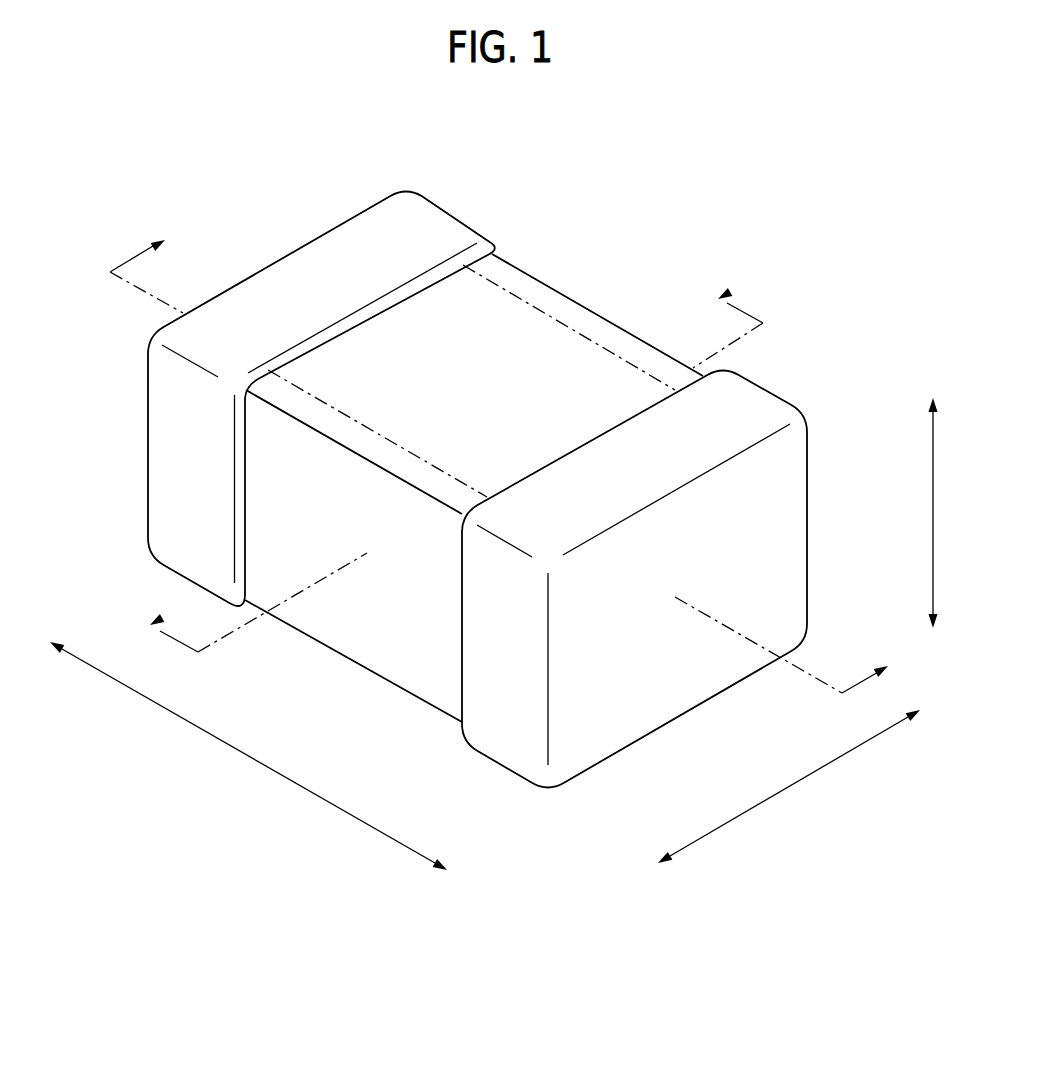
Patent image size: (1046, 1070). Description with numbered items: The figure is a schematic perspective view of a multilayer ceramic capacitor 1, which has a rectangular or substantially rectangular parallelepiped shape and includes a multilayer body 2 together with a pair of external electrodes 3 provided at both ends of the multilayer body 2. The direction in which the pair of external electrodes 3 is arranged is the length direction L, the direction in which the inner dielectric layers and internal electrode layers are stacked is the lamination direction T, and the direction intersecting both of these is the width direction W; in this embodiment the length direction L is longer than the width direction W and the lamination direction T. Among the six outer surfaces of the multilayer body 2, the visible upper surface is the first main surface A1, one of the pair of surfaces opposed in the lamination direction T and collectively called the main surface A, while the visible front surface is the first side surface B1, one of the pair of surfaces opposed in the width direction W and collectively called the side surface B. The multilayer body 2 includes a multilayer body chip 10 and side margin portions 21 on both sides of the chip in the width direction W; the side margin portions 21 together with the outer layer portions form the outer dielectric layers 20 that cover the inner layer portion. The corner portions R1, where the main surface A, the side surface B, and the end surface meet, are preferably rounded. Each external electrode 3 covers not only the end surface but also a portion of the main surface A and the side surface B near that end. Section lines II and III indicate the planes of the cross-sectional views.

The multilayer ceramic capacitor 1 is at (848, 248).
The multilayer body 2 is at (474, 460).
The external electrode 3 is at (413, 217).
The multilayer body chip 10 is at (393, 333).
The outer dielectric layers 20 is at (613, 327).
The side margin portions 21 is at (295, 403).
The corner portions R1 is at (553, 312).
The first main surface A1 is at (379, 438).
The main surface A is at (512, 387).
The first side surface B1 is at (353, 616).
The side surface B is at (385, 535).
The length direction L is at (248, 756).
The width direction W is at (789, 786).
The lamination direction T is at (944, 513).
The section line II- II is at (510, 462).
The section line III- III is at (441, 468).